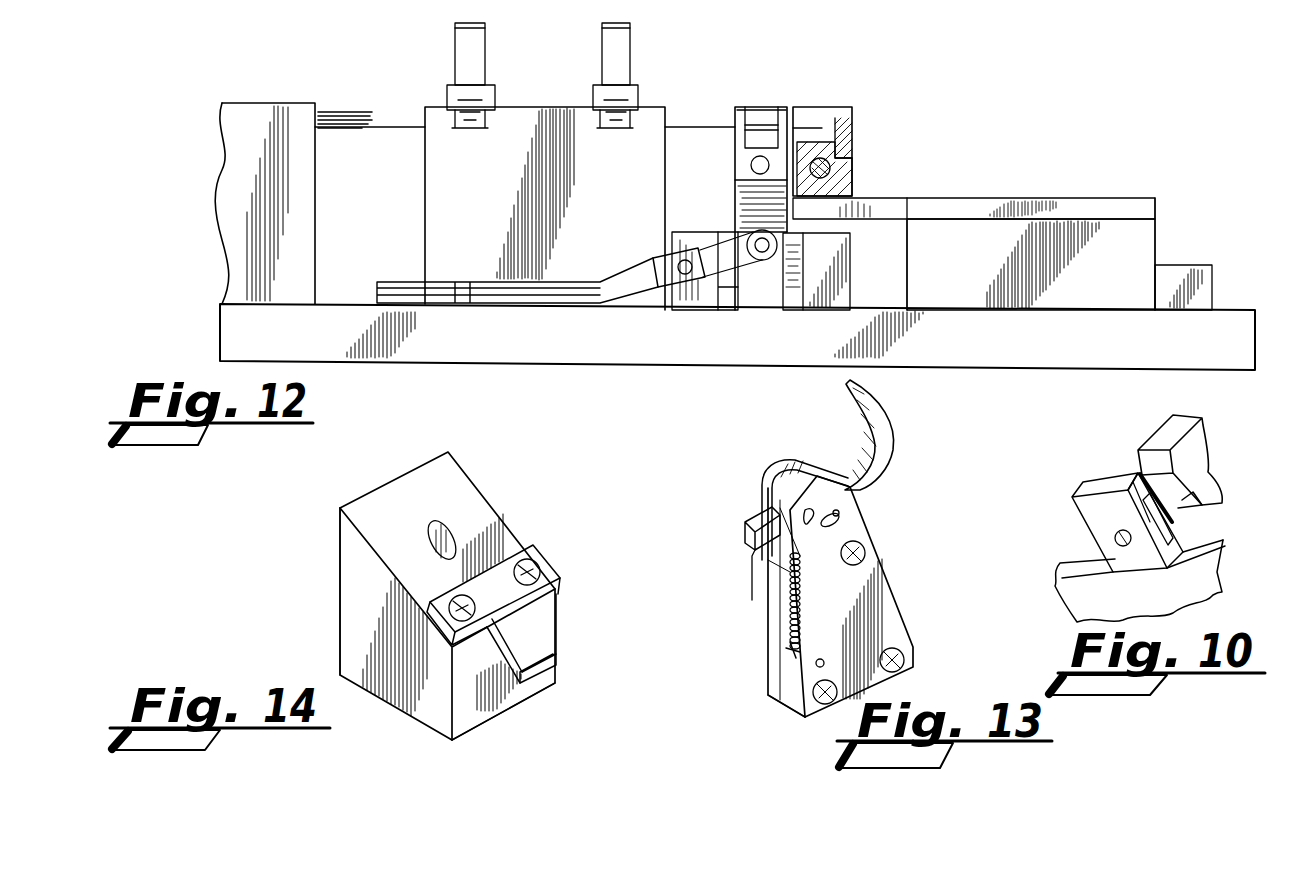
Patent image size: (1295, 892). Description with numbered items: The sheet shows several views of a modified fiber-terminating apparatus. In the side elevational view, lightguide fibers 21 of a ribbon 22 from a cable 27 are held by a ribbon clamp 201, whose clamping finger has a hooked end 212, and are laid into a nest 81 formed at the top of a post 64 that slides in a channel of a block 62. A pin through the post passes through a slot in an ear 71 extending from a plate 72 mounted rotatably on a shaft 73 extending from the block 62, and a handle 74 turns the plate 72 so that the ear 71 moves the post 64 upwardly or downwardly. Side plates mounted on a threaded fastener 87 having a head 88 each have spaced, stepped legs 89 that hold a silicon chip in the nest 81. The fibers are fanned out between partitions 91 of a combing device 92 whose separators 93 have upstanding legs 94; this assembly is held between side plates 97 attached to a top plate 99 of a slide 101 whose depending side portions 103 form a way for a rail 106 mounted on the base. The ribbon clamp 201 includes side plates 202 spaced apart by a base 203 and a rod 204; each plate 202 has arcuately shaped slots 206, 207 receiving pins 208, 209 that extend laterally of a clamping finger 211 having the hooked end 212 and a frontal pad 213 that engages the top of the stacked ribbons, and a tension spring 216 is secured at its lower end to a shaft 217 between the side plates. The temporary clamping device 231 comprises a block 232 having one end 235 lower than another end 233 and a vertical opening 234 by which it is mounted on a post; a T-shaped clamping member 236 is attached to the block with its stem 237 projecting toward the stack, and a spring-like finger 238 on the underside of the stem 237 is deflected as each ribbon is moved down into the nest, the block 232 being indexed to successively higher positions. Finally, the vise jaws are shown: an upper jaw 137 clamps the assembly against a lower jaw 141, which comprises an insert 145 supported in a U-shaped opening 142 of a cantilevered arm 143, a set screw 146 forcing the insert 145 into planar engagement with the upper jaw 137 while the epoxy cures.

In FIG. 12, the cable 27 is at (326, 112).
In FIG. 12, the lightguide ribbon 22 is at (368, 126).
In FIG. 12, the ribbon clamp 201 is at (509, 74).
In FIG. 12, the hooked end 212 is at (467, 122).
In FIG. 13, the hooked end 212 is at (745, 537).
In FIG. 12, the nest 81 is at (781, 88).
In FIG. 12, the legs 89 is at (742, 110).
In FIG. 12, the head 88 is at (741, 148).
In FIG. 12, the threaded fastener 87 is at (751, 165).
In FIG. 12, the lightguide fibers 21 is at (806, 127).
In FIG. 12, the side plates 97 is at (828, 110).
In FIG. 12, the partitions 91 is at (850, 125).
In FIG. 12, the separators 93 is at (852, 137).
In FIG. 12, the combing device 92 is at (860, 167).
In FIG. 12, the upstanding leg 94 is at (840, 190).
In FIG. 12, the post 64 is at (740, 208).
In FIG. 12, the top plate 99 is at (1078, 199).
In FIG. 12, the slide 101 is at (1157, 189).
In FIG. 12, the depending side portions 103 is at (1115, 288).
In FIG. 12, the rail 106 is at (1173, 272).
In FIG. 12, the block 62 is at (852, 282).
In FIG. 12, the ear 71 is at (760, 262).
In FIG. 12, the plate 72 is at (668, 272).
In FIG. 12, the shaft 73 is at (685, 276).
In FIG. 12, the handle 74 is at (575, 303).
In FIG. 13, the side plates 202 is at (772, 633).
In FIG. 13, the base 203 is at (834, 636).
In FIG. 13, the rod 204 is at (860, 550).
In FIG. 13, the arcuately shaped slot 206 is at (853, 506).
In FIG. 13, the arcuately shaped slot 207 is at (840, 512).
In FIG. 13, the pins 208 is at (808, 528).
In FIG. 13, the pins 209 is at (842, 521).
In FIG. 13, the clamping finger 211 is at (757, 520).
In FIG. 13, the frontal pad 213 is at (752, 556).
In FIG. 13, the tension spring 216 is at (790, 608).
In FIG. 13, the shaft 217 is at (780, 663).
In FIG. 14, the device 231 is at (445, 599).
In FIG. 14, the block 232 is at (425, 705).
In FIG. 14, the end 233 is at (338, 556).
In FIG. 14, the opening 234 is at (442, 519).
In FIG. 14, the end 235 is at (510, 695).
In FIG. 14, the T-shaped clamping member 236 is at (497, 580).
In FIG. 14, the stem 237 is at (530, 623).
In FIG. 14, the spring-like finger 238 is at (548, 664).
In FIG. 10, the jaw 137 is at (1183, 487).
In FIG. 10, the lower jaw 141 is at (1107, 477).
In FIG. 10, the U-shaped opening 142 is at (1183, 543).
In FIG. 10, the arm 143 is at (1090, 507).
In FIG. 10, the insert 145 is at (1167, 528).
In FIG. 10, the set screw 146 is at (1115, 538).